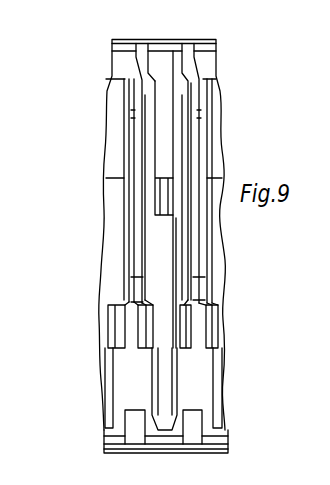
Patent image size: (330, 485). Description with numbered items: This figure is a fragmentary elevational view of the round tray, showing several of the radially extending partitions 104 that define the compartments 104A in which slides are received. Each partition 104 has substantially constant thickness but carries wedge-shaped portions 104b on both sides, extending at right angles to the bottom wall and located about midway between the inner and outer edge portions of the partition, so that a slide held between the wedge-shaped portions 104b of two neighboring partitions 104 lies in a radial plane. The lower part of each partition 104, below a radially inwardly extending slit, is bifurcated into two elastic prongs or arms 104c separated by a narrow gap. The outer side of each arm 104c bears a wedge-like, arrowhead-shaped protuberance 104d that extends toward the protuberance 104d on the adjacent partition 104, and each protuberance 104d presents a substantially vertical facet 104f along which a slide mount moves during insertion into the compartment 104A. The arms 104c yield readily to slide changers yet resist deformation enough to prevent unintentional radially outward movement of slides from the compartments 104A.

The partition 104 is at (118, 117).
The wedge-shaped portion 104b is at (160, 80).
The protuberance 104d is at (167, 325).
The facet 104f is at (172, 340).
The elastic prong or arm 104c is at (147, 348).
The compartment 104A is at (204, 397).